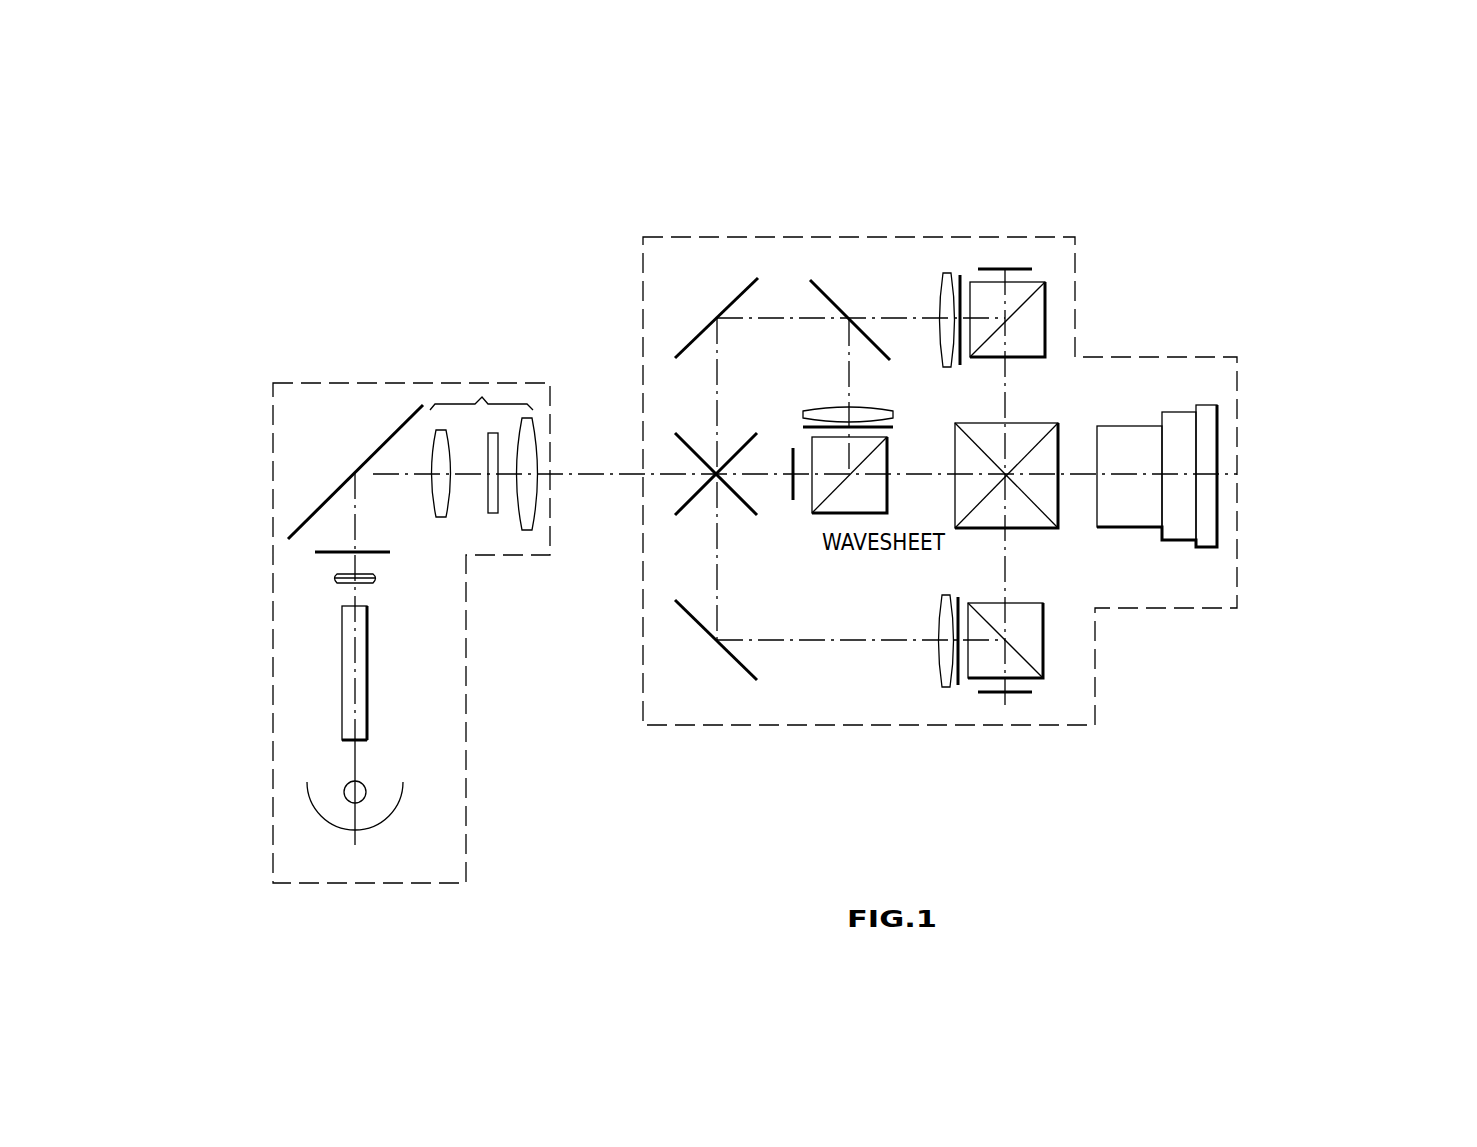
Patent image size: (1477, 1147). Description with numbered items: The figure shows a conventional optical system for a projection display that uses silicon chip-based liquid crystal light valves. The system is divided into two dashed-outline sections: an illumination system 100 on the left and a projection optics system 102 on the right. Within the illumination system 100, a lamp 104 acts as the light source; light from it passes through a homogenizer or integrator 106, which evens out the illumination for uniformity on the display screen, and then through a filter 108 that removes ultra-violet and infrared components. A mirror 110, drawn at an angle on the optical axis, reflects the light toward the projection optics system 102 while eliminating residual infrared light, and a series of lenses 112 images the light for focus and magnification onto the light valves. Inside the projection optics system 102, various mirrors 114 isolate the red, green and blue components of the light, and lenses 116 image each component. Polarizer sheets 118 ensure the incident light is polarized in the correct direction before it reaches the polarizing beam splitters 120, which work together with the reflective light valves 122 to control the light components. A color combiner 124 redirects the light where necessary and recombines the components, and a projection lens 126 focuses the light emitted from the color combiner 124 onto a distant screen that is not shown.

The illumination system 100 is at (273, 413).
The projection optics system 102 is at (848, 237).
The lamp 104 is at (313, 805).
The homogenizer (integrator) 106 is at (342, 692).
The filter 108 is at (338, 579).
The mirror 110 is at (317, 505).
The series of lenses 112 is at (482, 397).
The mirrors 114 is at (708, 687).
The lenses 116 is at (945, 273).
The polarizer sheets 118 is at (960, 367).
The polarizing beam splitters (PBS) 120 is at (1047, 295).
The reflective light valves 122 is at (1013, 269).
The color combiner 124 is at (1047, 423).
The projection lens 126 is at (1207, 403).